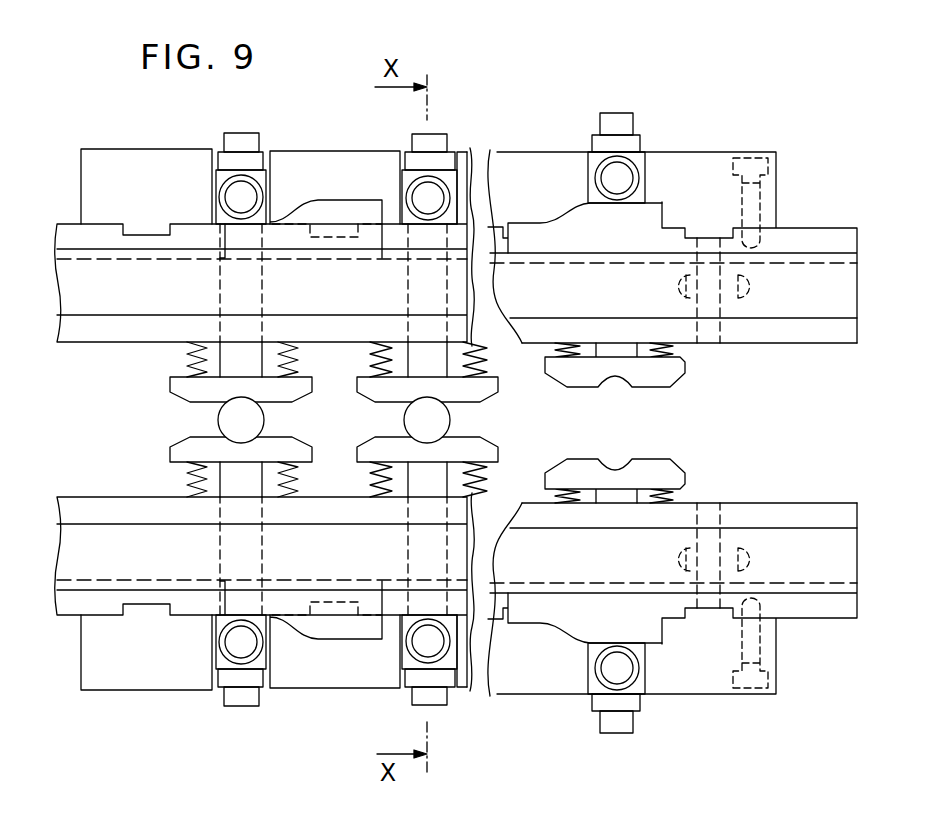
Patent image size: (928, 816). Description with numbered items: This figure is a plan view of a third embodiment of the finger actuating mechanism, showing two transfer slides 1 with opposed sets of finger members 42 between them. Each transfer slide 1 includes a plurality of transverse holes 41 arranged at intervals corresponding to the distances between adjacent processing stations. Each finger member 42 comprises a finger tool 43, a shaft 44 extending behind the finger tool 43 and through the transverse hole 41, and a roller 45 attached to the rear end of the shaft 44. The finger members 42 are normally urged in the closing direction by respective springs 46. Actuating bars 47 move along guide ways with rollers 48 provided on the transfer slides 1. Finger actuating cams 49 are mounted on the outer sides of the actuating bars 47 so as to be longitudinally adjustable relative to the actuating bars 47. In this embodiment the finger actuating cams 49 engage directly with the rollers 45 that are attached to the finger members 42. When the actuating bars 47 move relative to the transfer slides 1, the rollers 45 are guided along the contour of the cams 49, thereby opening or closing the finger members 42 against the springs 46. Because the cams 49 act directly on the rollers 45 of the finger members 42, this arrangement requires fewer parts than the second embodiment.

The transfer slide 1 is at (761, 336).
The transverse hole 41 is at (262, 283).
The finger member 42 is at (166, 383).
The finger tool 43 is at (197, 399).
The shaft 44 is at (222, 295).
The roller 45 is at (217, 192).
The spring 46 is at (187, 352).
The actuating bar 47 is at (857, 288).
The roller 48 is at (748, 291).
The finger actuating cam 49 is at (583, 217).